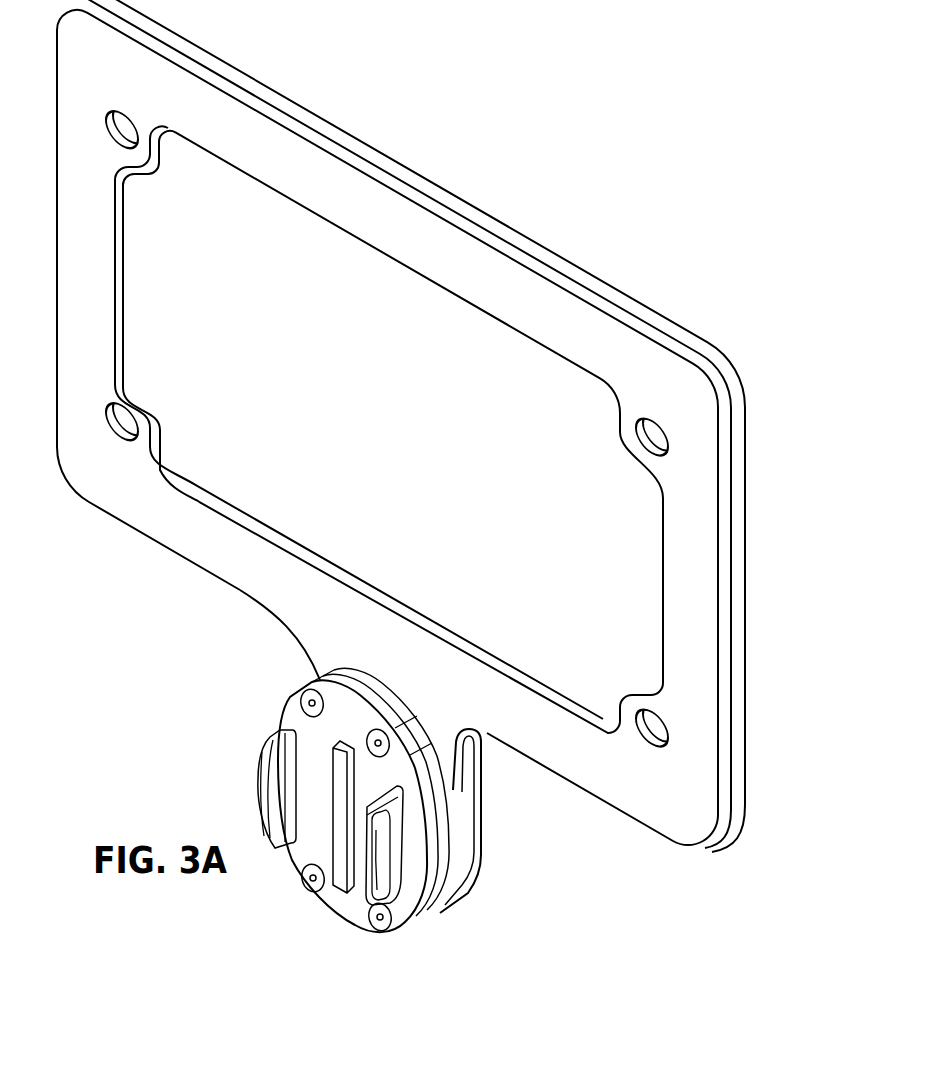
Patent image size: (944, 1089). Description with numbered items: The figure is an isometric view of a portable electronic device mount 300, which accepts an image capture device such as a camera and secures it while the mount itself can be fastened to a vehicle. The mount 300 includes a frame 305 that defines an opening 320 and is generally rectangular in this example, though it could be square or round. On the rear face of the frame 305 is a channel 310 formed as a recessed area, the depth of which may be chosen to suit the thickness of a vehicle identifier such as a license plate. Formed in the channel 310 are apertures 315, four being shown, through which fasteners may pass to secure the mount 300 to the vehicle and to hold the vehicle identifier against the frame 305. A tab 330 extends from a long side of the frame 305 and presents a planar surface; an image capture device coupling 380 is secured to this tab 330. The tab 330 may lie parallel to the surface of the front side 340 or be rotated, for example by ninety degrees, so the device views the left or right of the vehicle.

The portable electronic device mount 300 is at (718, 186).
The frame 305 is at (580, 263).
The channel 310 is at (749, 549).
The apertures 315 is at (634, 437).
The opening 320 is at (432, 344).
The tab 330 is at (476, 881).
The front side 340 is at (633, 758).
The image capture device coupling 380 is at (293, 699).